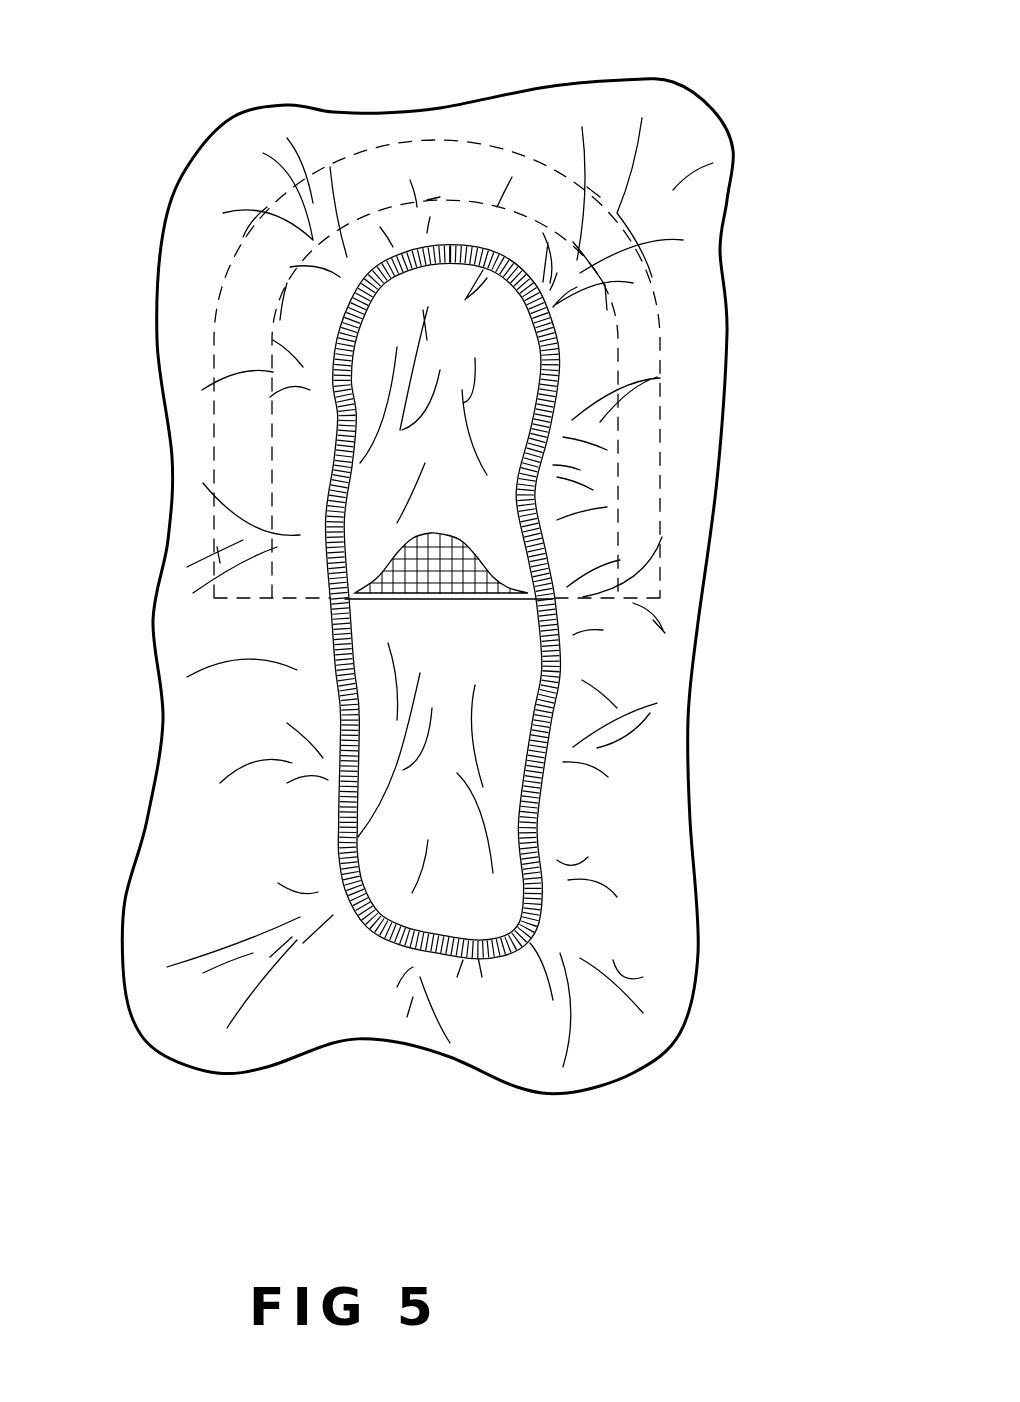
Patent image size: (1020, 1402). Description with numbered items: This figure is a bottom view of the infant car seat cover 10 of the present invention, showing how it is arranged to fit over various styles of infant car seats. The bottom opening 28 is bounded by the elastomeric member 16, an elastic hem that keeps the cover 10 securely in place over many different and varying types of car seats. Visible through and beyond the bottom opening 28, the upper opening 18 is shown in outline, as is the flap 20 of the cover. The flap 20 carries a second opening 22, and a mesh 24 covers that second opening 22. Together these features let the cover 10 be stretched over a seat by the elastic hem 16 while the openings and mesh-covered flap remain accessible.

The infant car seat cover 10 is at (620, 133).
The elastomeric member 16 is at (540, 743).
The upper opening 18 is at (283, 435).
The flap 20 is at (470, 328).
The second opening 22 is at (487, 577).
The mesh 24 is at (392, 590).
The bottom opening 28 is at (493, 475).